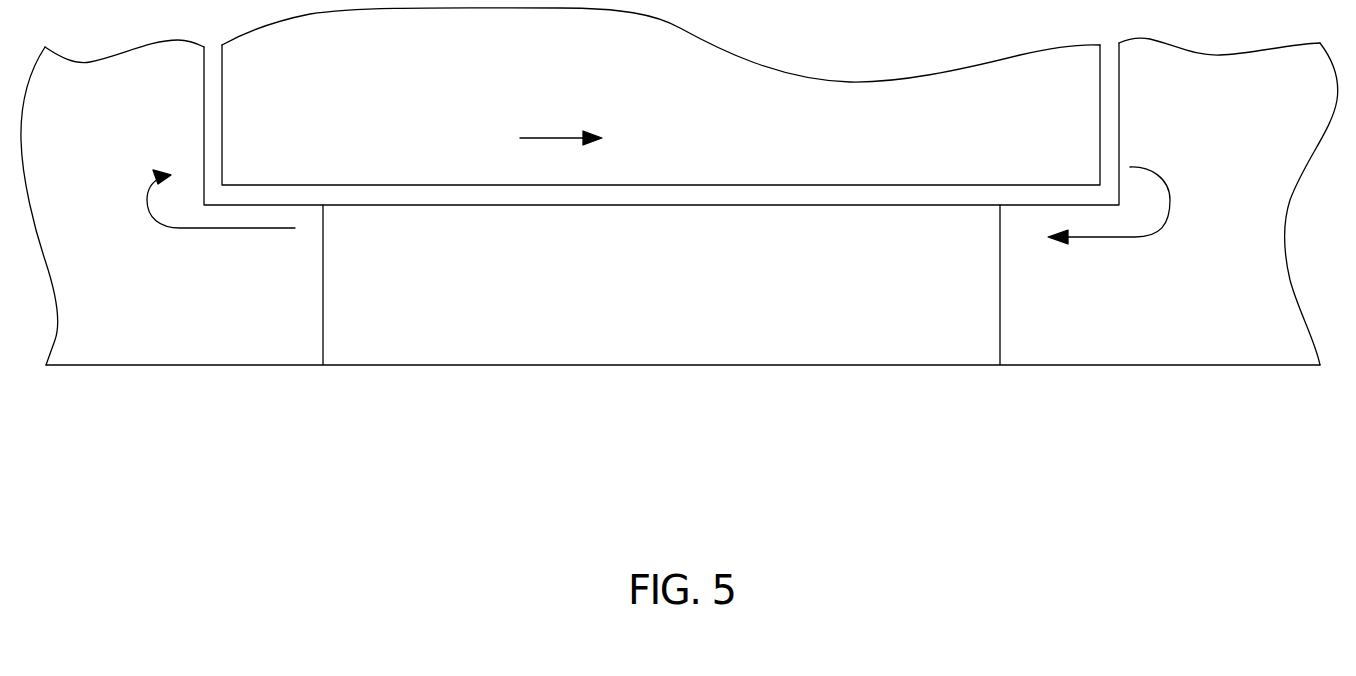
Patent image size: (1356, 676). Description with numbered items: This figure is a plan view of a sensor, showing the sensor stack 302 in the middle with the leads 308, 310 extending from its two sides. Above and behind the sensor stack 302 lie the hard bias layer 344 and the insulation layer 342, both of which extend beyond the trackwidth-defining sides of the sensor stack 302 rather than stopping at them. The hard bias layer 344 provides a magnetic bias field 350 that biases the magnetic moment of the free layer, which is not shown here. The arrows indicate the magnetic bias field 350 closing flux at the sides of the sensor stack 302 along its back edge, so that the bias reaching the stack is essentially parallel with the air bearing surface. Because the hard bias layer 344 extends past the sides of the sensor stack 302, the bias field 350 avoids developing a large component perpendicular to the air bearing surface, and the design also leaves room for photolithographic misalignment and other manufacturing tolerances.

The sensor stack 302 is at (707, 279).
The lead 308 is at (1210, 272).
The lead 310 is at (210, 289).
The insulation layer 342 is at (956, 195).
The hard bias layer 344 is at (669, 90).
The magnetic bias field 350 is at (148, 199).